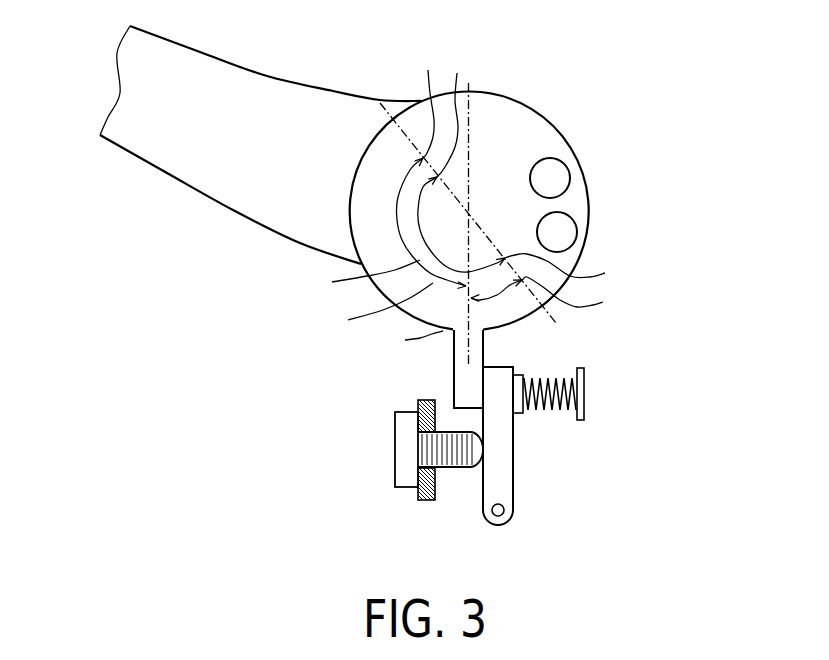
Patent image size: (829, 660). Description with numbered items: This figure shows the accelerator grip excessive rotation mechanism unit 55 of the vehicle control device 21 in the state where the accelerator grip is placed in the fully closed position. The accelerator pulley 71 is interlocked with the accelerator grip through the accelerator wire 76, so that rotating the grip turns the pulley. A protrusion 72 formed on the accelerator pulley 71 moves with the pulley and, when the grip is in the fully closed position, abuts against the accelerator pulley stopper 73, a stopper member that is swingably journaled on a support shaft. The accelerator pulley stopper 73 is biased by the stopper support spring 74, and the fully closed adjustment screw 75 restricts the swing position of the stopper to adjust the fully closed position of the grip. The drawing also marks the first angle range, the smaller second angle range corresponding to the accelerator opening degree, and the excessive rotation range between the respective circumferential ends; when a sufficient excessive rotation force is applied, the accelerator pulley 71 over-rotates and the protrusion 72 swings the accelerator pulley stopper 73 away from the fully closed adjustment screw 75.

The vehicle control device 21 is at (530, 64).
The accelerator grip excessive rotation mechanism unit 55 is at (662, 266).
The accelerator pulley 71 is at (589, 180).
The protrusion 72 is at (455, 383).
The accelerator pulley stopper 73 is at (513, 482).
The stopper support spring 74 is at (552, 410).
The fully closed adjustment screw 75 is at (404, 488).
The accelerator wire 76 is at (188, 198).